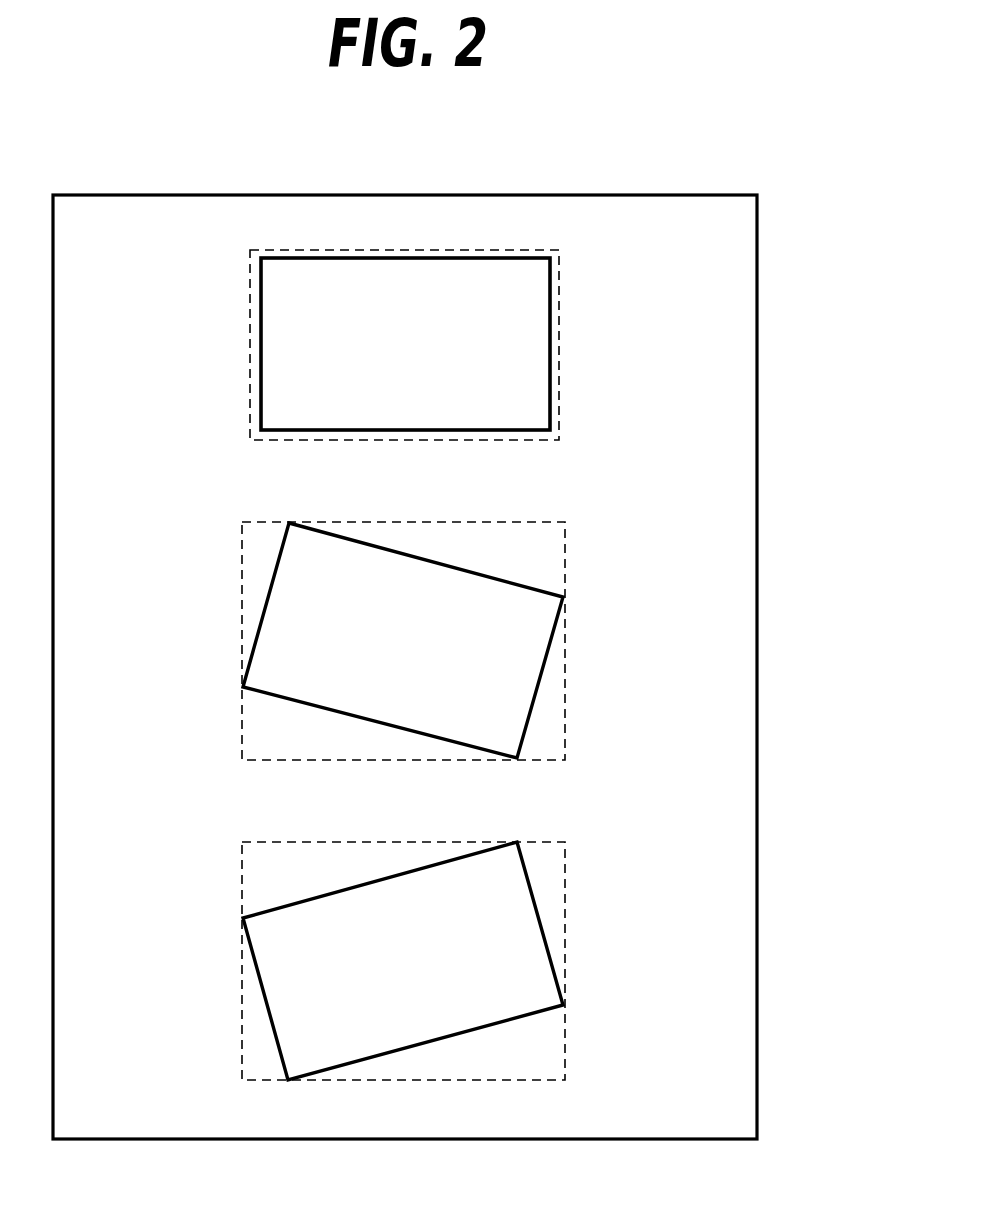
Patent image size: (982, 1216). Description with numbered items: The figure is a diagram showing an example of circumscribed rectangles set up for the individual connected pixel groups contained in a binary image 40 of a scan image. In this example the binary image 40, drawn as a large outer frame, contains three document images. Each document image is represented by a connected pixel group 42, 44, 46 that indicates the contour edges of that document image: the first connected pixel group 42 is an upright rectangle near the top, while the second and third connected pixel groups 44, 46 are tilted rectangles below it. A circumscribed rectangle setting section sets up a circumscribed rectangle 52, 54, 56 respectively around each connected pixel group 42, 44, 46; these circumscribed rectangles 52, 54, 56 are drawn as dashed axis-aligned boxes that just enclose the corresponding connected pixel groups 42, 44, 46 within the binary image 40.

The binary image 40 is at (758, 623).
The connected pixel group 42 is at (550, 342).
The connected pixel group 44 is at (535, 709).
The connected pixel group 46 is at (537, 899).
The circumscribed rectangle 52 is at (250, 341).
The circumscribed rectangle 54 is at (242, 570).
The circumscribed rectangle 56 is at (242, 875).